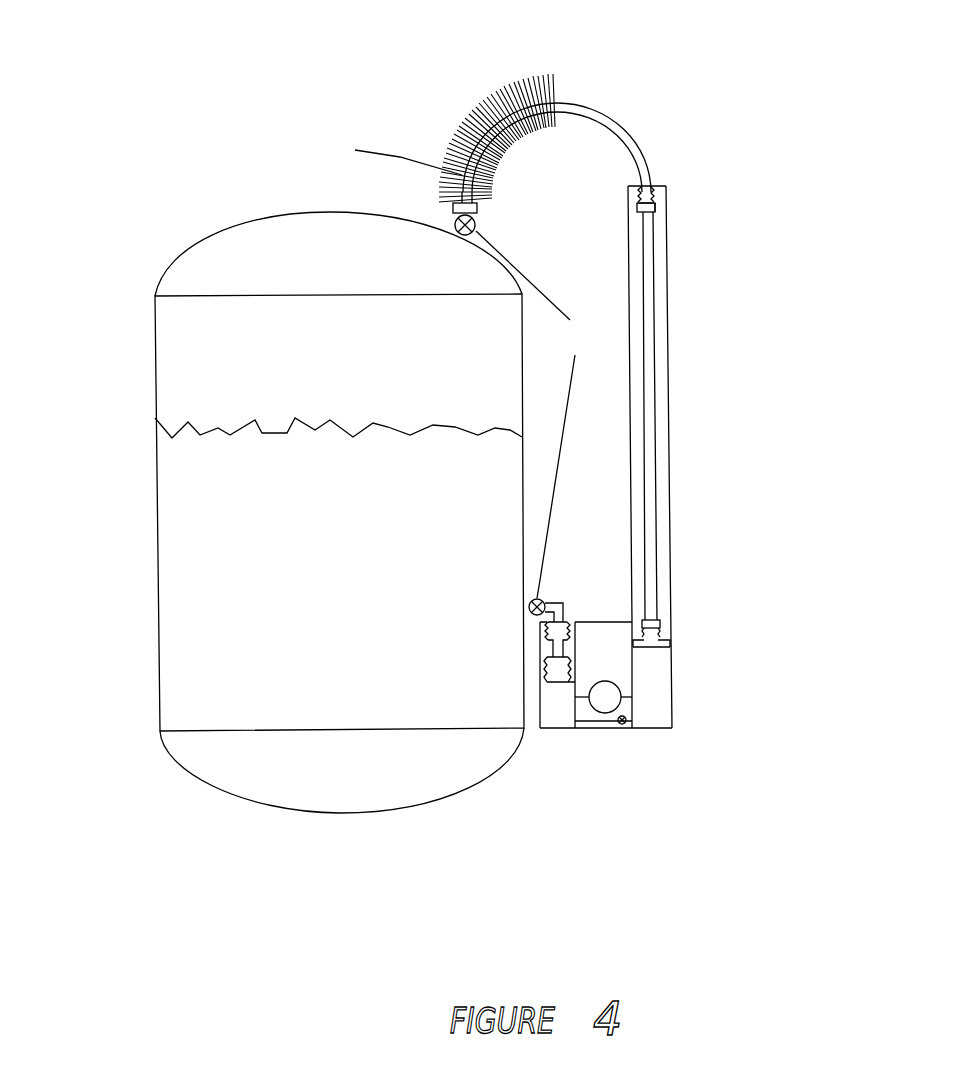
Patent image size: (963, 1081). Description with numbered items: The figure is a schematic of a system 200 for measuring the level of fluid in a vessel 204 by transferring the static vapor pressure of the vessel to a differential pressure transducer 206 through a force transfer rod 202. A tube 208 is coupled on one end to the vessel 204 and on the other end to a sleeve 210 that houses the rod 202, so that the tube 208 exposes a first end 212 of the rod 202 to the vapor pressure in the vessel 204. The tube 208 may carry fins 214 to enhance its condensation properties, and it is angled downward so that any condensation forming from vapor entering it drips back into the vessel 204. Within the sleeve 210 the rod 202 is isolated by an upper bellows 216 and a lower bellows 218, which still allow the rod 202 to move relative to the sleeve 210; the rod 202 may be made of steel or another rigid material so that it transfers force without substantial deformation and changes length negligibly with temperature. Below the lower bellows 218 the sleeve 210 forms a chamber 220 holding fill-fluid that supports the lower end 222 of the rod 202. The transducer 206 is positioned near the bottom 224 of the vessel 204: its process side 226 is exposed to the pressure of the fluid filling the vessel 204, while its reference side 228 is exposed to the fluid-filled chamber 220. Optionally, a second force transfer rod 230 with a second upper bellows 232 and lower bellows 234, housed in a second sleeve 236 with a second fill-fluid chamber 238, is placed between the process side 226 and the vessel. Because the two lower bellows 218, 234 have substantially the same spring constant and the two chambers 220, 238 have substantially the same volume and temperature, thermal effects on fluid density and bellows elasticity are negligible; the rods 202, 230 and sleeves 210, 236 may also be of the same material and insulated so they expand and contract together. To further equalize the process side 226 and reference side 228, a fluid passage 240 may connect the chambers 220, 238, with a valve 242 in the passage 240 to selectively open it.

The system 200 is at (203, 137).
The force transfer rod 202 is at (656, 539).
The vessel 204 is at (157, 548).
The differential pressure transducer 206 is at (603, 715).
The tube 208 is at (603, 117).
The sleeve 210 is at (667, 425).
The first end 212 is at (663, 175).
The fins 214 is at (495, 92).
The upper bellows 216 is at (653, 190).
The lower bellows 218 is at (660, 633).
The chamber 220 is at (647, 685).
The lower end 222 is at (561, 699).
The bottom 224 is at (383, 808).
The process side 226 is at (575, 695).
The reference side 228 is at (632, 697).
The second force transfer rod 230 is at (725, 416).
The second upper bellows 232 is at (566, 622).
The lower bellows 234 is at (655, 637).
The second sleeve 236 is at (543, 660).
The second fill-fluid chamber 238 is at (545, 718).
The fluid passage 240 is at (613, 730).
The valve 242 is at (630, 722).